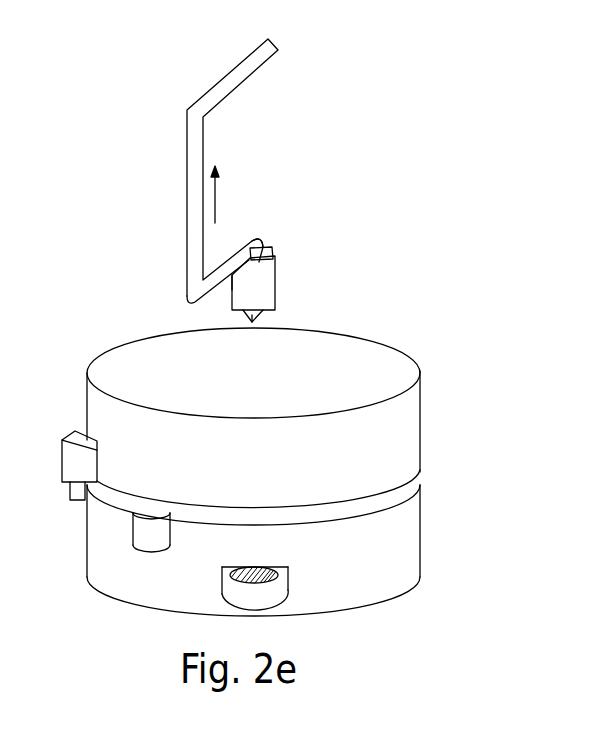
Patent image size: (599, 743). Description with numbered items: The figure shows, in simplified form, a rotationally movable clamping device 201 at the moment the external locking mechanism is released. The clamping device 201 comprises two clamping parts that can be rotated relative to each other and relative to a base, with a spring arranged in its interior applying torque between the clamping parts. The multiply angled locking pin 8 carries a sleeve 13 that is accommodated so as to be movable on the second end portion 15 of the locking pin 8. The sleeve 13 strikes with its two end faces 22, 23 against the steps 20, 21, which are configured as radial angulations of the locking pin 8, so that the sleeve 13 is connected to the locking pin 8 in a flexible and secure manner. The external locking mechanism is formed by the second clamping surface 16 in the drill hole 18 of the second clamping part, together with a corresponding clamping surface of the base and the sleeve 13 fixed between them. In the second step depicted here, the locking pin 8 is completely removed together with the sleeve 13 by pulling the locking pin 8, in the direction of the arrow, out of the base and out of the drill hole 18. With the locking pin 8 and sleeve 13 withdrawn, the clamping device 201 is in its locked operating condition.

The locking pin 8 is at (238, 80).
The sleeve 13 is at (268, 285).
The second end portion 15 is at (255, 240).
The second clamping surface 16 is at (301, 568).
The drill hole 18 is at (257, 568).
The step 20 is at (232, 275).
The step 21 is at (252, 316).
The end face 22 is at (273, 256).
The end face 23 is at (276, 312).
The clamping device 201 is at (418, 324).